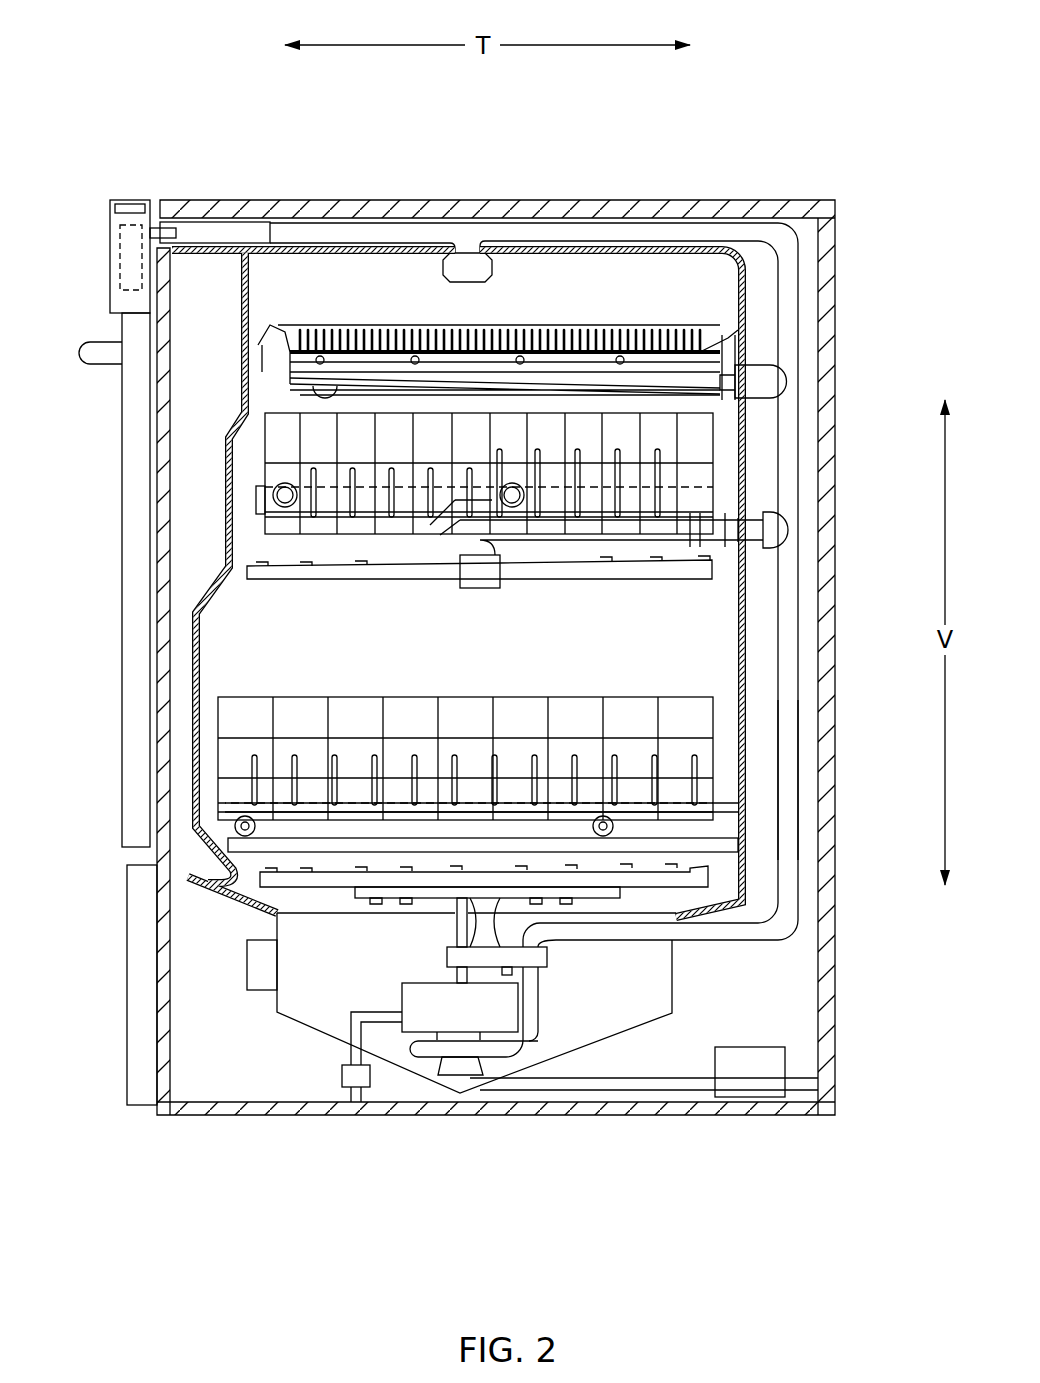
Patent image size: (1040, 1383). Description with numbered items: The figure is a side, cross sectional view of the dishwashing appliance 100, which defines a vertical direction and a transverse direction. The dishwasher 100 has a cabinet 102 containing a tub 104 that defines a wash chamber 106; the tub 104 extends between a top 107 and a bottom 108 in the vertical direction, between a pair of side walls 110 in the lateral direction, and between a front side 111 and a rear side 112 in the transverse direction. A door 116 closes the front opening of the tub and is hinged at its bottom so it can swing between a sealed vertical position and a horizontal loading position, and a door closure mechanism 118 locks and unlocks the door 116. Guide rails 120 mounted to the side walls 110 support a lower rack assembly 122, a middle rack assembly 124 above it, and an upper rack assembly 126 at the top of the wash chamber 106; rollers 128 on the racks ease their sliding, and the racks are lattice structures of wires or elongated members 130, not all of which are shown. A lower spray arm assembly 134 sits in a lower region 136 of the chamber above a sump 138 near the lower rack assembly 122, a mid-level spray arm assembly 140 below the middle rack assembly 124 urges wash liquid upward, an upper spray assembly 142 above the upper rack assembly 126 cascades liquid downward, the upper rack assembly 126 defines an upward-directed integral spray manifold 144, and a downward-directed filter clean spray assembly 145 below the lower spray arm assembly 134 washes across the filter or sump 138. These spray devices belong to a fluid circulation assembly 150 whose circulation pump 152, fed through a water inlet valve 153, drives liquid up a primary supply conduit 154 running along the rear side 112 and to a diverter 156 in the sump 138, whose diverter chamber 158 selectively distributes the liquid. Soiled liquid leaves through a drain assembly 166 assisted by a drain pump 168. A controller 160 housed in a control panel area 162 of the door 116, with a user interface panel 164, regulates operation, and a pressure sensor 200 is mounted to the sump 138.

The dishwashing appliance 100 is at (771, 95).
The cabinet 102 is at (834, 240).
The tub 104 is at (368, 649).
The wash chamber 106 is at (253, 657).
The top 107 is at (408, 242).
The bottom 108 is at (743, 912).
The side walls 110 is at (418, 282).
The front side 111 is at (259, 297).
The rear side 112 is at (752, 310).
The door 116 is at (152, 805).
The door closure mechanism 118 is at (216, 223).
The guide rails 120 is at (357, 398).
The lower rack assembly 122 is at (508, 688).
The middle rack assembly 124 is at (265, 395).
The upper rack assembly 126 is at (350, 320).
The rollers 128 is at (322, 398).
The elongated members 130 is at (255, 695).
The lower spray arm assembly 134 is at (623, 884).
The lower region 136 is at (710, 826).
The sump 138 is at (275, 1008).
The mid-level spray arm assembly 140 is at (588, 582).
The upper spray assembly 142 is at (493, 270).
The integral spray manifold 144 is at (661, 397).
The filter clean spray assembly 145 is at (577, 897).
The fluid circulation assembly 150 is at (384, 987).
The circulation pump 152 is at (508, 1008).
The water inlet valve 153 is at (370, 1080).
The primary supply conduit 154 is at (793, 688).
The diverter 156 is at (443, 956).
The diverter chamber 158 is at (541, 958).
The controller 160 is at (112, 240).
The control panel area 162 is at (121, 196).
The user interface panel 164 is at (143, 196).
The drain assembly 166 is at (851, 1084).
The drain pump 168 is at (747, 1052).
The pressure sensor 200 is at (248, 953).